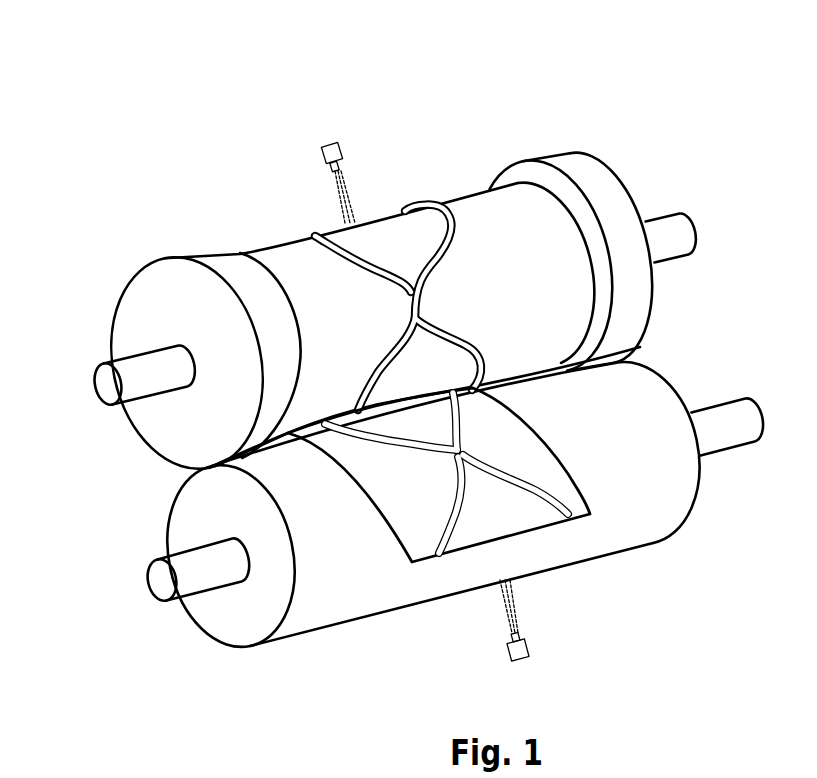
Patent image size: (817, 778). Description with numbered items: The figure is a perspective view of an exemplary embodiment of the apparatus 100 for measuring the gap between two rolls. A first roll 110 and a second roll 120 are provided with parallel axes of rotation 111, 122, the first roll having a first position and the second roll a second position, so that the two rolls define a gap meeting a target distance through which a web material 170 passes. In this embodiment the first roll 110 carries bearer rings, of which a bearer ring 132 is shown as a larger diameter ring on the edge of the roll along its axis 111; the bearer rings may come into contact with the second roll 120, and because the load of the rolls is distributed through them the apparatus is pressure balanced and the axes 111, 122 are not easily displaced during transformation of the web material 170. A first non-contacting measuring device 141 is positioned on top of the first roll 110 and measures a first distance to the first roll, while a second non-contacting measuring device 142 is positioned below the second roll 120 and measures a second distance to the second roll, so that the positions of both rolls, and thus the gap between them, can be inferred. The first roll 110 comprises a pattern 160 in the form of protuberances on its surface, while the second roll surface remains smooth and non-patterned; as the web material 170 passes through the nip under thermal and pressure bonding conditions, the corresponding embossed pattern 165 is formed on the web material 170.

The embossing roller system 100 is at (131, 112).
The first roll 110 is at (278, 265).
The axis of rotation of the first roll 111 is at (668, 230).
The second roll 120 is at (645, 547).
The axis of rotation of the second roll 122 is at (733, 415).
The bearer ring 132 is at (211, 263).
The first non-contacting measuring device 141 is at (333, 142).
The second non-contacting measuring device 142 is at (529, 648).
The pattern 160 is at (458, 200).
The embossed pattern 165 is at (432, 562).
The web material 170 is at (552, 528).